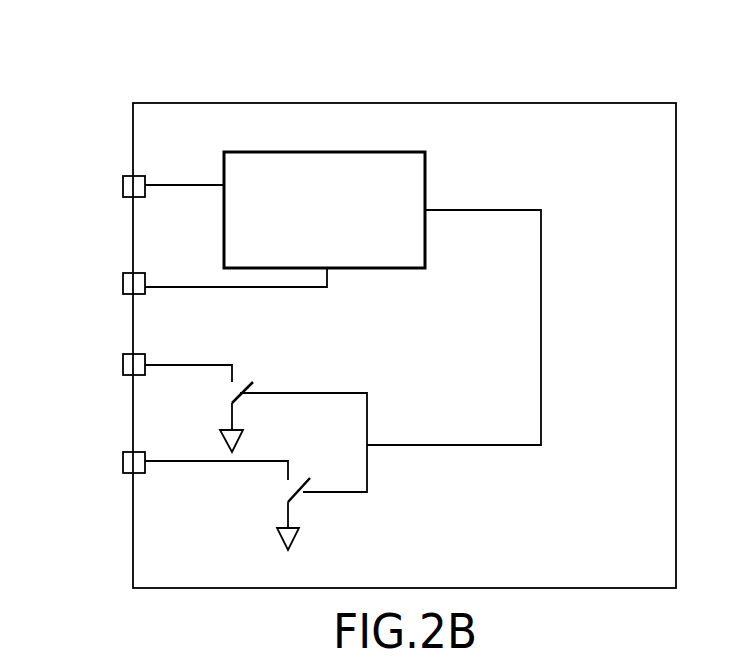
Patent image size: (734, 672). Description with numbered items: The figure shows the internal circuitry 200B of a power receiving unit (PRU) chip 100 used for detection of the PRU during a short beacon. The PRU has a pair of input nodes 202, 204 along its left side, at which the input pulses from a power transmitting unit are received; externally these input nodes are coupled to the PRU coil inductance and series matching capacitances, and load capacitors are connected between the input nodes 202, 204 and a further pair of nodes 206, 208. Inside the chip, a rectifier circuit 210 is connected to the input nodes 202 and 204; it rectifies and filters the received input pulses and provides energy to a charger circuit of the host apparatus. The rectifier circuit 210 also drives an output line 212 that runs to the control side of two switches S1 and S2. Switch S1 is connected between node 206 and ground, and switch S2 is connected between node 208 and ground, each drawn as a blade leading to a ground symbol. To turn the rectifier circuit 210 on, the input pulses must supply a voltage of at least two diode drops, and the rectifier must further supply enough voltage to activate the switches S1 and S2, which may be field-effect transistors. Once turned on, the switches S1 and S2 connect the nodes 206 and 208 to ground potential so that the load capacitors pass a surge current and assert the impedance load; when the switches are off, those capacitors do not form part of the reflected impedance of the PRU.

The device / system 100 is at (567, 559).
The circuit arrangement 200B is at (118, 74).
The input node 202 is at (145, 177).
The input node 204 is at (145, 275).
The node 206 is at (145, 356).
The node 208 is at (145, 454).
The rectifier circuit 210 is at (308, 251).
The output node / line 212 is at (541, 435).
The switch S1 is at (293, 418).
The switch S2 is at (300, 498).